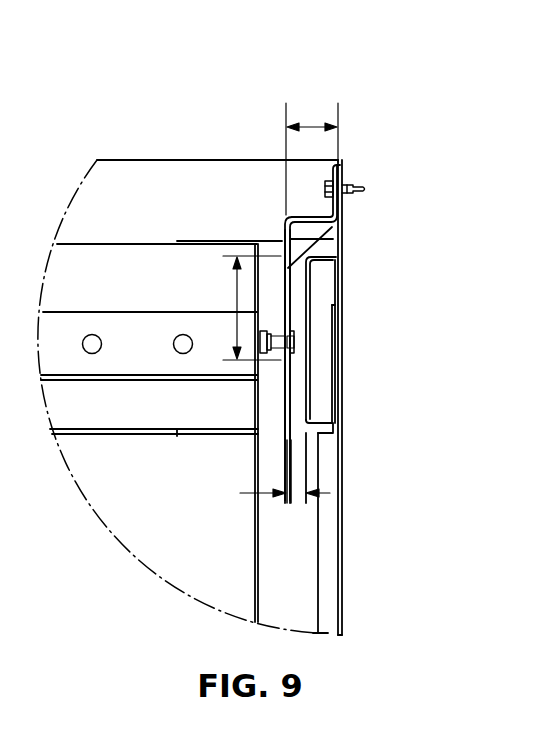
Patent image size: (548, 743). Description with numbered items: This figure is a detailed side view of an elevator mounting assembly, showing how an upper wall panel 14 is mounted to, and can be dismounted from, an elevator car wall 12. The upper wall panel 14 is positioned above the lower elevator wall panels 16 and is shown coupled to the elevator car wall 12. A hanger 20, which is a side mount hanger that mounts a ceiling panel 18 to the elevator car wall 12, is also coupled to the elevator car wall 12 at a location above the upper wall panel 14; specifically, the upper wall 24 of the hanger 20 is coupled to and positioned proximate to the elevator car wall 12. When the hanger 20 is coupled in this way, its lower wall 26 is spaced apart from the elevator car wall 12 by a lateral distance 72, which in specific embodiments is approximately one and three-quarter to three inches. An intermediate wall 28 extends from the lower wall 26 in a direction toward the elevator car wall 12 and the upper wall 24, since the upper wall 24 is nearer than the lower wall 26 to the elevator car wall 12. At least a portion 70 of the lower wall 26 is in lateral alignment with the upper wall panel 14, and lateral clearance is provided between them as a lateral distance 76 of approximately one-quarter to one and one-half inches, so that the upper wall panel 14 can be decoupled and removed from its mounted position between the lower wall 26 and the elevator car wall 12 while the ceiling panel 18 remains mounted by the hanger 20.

The elevator car wall 12 is at (343, 458).
The upper wall panel 14 is at (318, 385).
The lower elevator wall panel 16 is at (323, 543).
The ceiling panel 18 is at (128, 338).
The hanger 20 is at (282, 217).
The upper wall 24 is at (340, 208).
The lower wall 26 is at (283, 250).
The intermediate wall 28 is at (303, 223).
The portion 70 is at (237, 300).
The lateral distance 72 is at (316, 123).
The lateral distance 76 is at (297, 500).